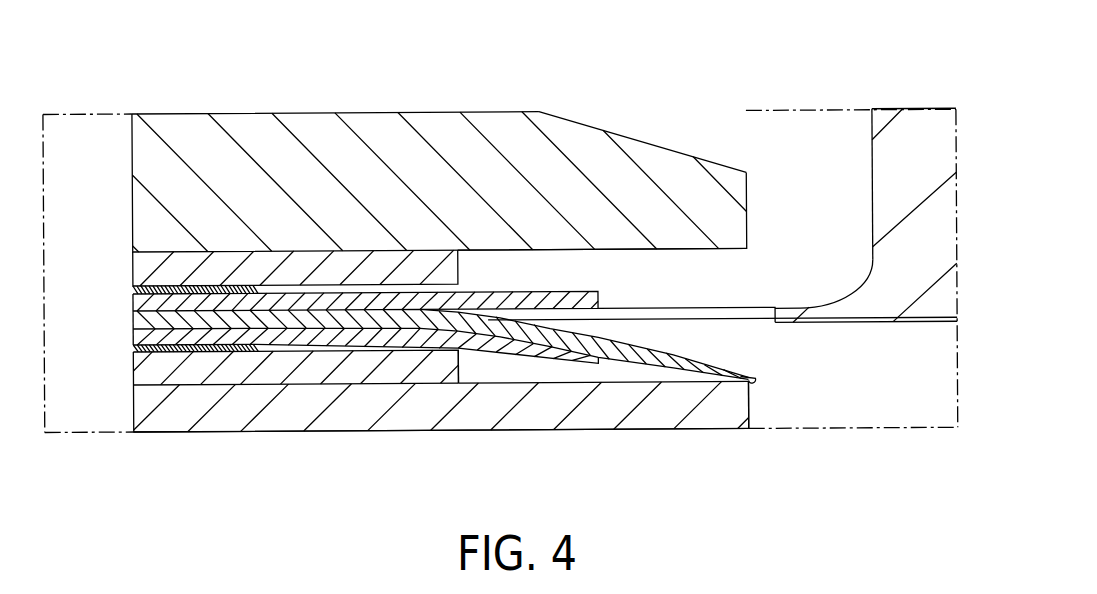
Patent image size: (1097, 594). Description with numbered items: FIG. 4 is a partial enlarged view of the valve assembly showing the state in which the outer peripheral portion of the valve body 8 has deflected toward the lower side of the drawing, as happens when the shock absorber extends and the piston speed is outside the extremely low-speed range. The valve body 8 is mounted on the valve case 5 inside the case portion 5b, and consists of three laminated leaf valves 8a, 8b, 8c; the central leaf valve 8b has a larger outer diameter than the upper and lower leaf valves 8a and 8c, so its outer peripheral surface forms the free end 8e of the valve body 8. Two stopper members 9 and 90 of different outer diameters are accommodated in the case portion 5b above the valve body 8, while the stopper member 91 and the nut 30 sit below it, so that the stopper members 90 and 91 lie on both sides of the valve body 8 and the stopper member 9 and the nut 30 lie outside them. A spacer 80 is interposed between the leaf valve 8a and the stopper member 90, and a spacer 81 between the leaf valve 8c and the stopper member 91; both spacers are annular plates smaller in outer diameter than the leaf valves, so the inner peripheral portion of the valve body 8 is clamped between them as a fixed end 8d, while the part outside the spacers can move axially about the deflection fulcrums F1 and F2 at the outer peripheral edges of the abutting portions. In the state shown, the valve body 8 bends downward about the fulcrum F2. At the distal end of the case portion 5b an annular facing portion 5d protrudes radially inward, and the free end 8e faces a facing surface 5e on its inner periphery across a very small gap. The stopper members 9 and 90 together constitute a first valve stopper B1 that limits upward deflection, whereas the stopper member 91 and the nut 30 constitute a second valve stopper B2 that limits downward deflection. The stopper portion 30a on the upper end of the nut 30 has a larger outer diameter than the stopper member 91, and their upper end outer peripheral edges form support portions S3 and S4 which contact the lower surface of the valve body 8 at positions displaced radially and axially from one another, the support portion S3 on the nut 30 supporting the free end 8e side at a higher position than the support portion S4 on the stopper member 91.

The valve case 5 is at (935, 105).
The case portion 5b is at (873, 168).
The facing portion 5d is at (824, 296).
The facing surface 5e is at (765, 308).
The valve body 8 is at (523, 286).
The leaf valve 8a is at (598, 293).
The leaf valve 8b is at (655, 371).
The leaf valve 8c is at (597, 365).
The fixed end 8d is at (133, 319).
The free end 8e is at (756, 380).
The stopper member 9 is at (640, 160).
The stopper member 90 is at (472, 252).
The nut 30 is at (713, 437).
The stopper portion 30a is at (420, 410).
The spacer 80 is at (133, 287).
The spacer 81 is at (133, 350).
The stopper member 91 is at (195, 372).
The first valve stopper B1 is at (712, 158).
The second valve stopper B2 is at (355, 437).
The deflection fulcrum F1 is at (270, 282).
The deflection fulcrum F2 is at (258, 350).
The support portion S3 is at (757, 380).
The support portion S4 is at (470, 347).